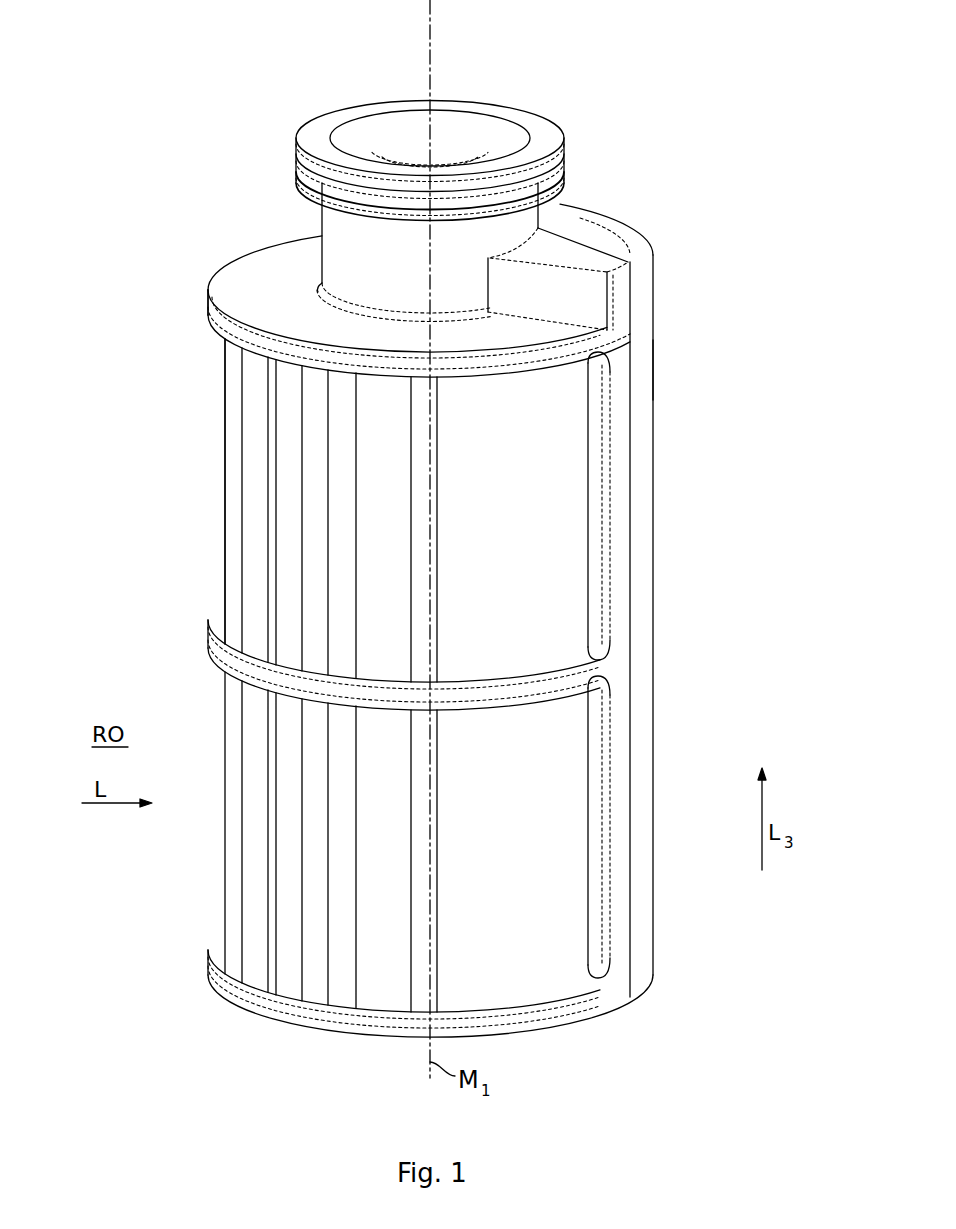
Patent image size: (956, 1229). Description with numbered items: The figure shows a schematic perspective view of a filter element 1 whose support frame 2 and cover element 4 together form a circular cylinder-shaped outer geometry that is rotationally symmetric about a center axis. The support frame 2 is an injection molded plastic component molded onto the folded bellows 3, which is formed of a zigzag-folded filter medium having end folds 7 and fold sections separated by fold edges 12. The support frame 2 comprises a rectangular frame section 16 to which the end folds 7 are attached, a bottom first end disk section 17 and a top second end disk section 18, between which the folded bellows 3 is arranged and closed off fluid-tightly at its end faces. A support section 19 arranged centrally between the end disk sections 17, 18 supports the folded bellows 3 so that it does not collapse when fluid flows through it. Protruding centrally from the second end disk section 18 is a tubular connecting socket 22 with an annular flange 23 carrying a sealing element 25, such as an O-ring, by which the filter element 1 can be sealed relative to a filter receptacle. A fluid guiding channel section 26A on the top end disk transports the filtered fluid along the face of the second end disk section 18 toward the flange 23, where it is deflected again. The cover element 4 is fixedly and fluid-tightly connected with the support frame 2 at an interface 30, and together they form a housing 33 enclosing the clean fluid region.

The filter element 1 is at (353, 76).
The support frame 2 is at (234, 286).
The folded bellows 3 is at (229, 527).
The cover element 4 is at (655, 318).
The end fold 7 is at (578, 850).
The fold edge 12 is at (285, 866).
The frame section 16 is at (620, 502).
The first end disk section 17 is at (508, 1017).
The second end disk section 18 is at (223, 334).
The support section 19 is at (222, 637).
The connecting socket 22 is at (338, 243).
The annular flange 23 is at (548, 118).
The sealing element 25 is at (566, 168).
The fluid guiding channel section 26A is at (595, 297).
The interface 30 is at (593, 248).
The housing 33 is at (655, 368).